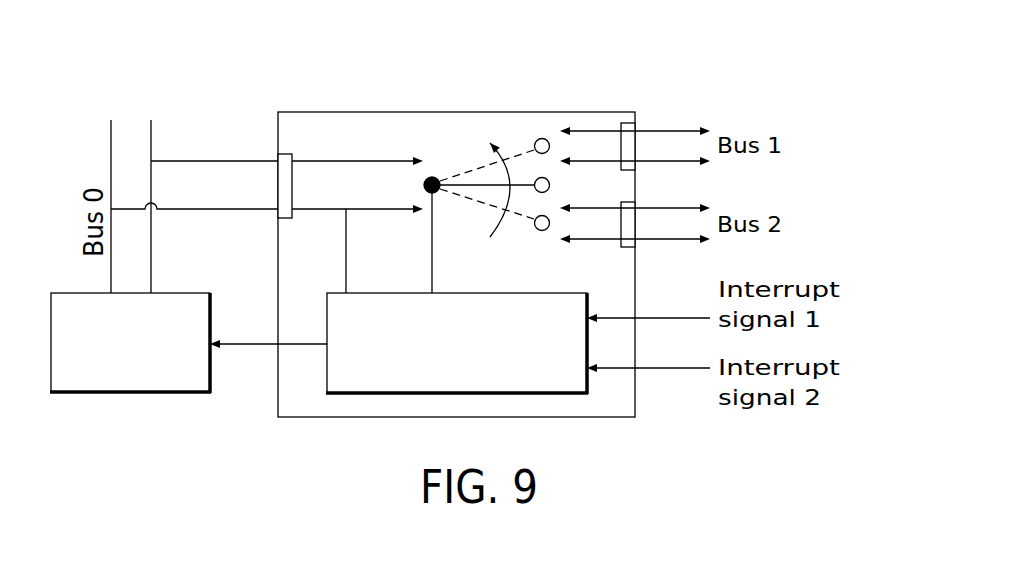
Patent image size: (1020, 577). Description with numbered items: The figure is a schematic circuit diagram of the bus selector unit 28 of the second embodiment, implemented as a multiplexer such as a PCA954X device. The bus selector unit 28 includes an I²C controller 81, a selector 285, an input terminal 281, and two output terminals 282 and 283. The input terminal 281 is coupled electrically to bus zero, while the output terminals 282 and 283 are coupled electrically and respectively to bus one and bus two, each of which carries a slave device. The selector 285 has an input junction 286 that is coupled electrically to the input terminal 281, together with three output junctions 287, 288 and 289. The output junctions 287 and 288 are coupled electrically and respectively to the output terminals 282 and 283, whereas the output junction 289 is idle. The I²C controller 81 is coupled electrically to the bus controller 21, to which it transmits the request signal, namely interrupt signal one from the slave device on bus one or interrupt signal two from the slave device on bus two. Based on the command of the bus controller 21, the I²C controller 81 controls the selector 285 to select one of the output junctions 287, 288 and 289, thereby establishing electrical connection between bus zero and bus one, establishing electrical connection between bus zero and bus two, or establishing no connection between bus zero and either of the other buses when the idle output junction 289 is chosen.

The bus controller 21 is at (170, 393).
The bus selector unit 28 is at (292, 112).
The I²C controller 81 is at (455, 292).
The input terminal 281 is at (293, 153).
The output terminal 282 is at (629, 122).
The output terminal 283 is at (630, 248).
The selector 285 is at (504, 135).
The input junction 286 is at (435, 177).
The output junction 287 is at (543, 138).
The output junction 288 is at (546, 230).
The output junction 289 is at (550, 185).